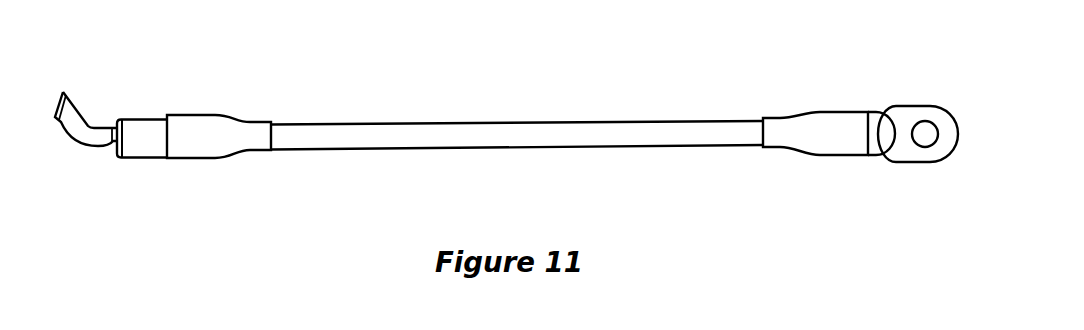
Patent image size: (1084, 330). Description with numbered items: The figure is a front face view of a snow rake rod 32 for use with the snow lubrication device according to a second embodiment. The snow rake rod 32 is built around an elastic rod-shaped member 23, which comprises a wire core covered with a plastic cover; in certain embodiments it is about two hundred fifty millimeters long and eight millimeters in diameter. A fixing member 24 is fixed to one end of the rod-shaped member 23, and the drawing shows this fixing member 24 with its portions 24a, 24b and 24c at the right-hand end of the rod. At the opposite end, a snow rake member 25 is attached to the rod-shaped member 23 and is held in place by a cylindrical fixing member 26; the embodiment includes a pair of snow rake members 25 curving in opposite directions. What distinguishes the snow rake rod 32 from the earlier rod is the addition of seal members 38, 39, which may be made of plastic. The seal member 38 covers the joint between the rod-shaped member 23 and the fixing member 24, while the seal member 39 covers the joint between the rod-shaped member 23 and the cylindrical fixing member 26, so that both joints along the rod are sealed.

The snow rake rod 32 is at (688, 45).
The snow rake member 25 is at (91, 133).
The cylindrical fixing member 26 is at (127, 130).
The seal member 39 is at (209, 149).
The rod-shaped member 23 is at (478, 137).
The seal member 38 is at (814, 143).
The fixing member 24 is at (942, 74).
The ring 24a is at (920, 113).
The rounded end 24b is at (876, 123).
The hole 24c is at (931, 143).